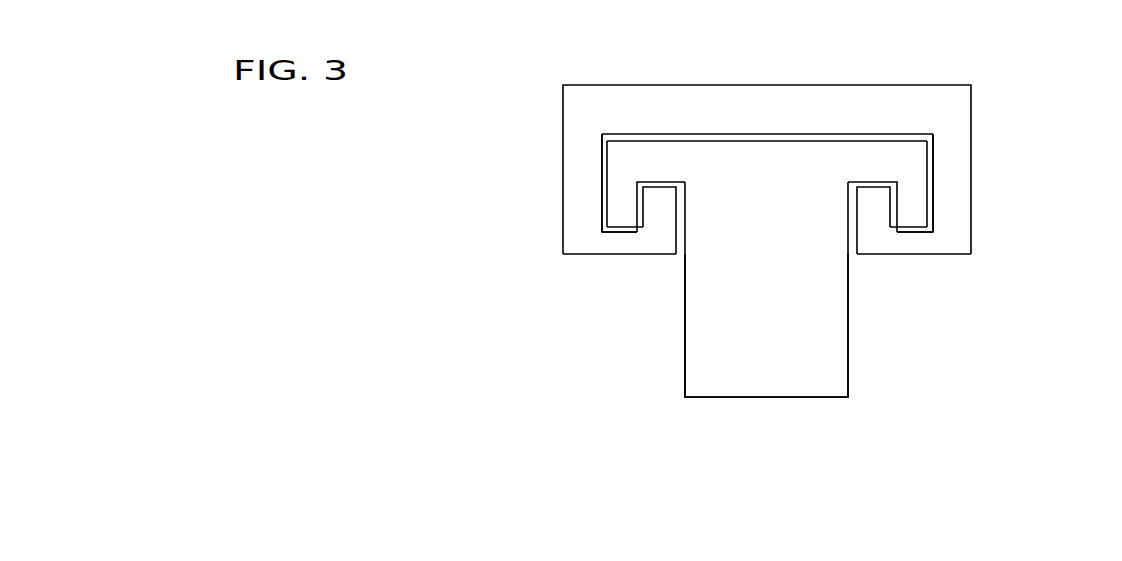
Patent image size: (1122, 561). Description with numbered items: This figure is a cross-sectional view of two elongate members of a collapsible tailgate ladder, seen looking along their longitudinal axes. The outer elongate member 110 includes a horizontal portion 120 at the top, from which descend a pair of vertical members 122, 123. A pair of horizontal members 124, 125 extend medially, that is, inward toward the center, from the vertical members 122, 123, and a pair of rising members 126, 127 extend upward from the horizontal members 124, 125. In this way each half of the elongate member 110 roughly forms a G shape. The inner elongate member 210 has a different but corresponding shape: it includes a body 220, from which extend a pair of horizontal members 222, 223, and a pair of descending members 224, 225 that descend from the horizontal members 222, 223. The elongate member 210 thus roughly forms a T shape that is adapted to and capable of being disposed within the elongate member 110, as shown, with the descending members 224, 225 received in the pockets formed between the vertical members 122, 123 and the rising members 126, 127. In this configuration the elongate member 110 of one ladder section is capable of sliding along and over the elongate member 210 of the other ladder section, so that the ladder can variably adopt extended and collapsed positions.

The elongate member 110 is at (993, 82).
The horizontal portion 120 is at (703, 97).
The vertical member 122 is at (585, 194).
The vertical member 123 is at (948, 167).
The horizontal member 124 is at (610, 250).
The horizontal member 125 is at (932, 245).
The rising member 126 is at (660, 213).
The rising member 127 is at (874, 215).
The elongate member 210 is at (674, 372).
The body 220 is at (800, 350).
The horizontal member 222 is at (656, 147).
The horizontal member 223 is at (873, 148).
The descending member 224 is at (625, 205).
The descending member 225 is at (910, 205).